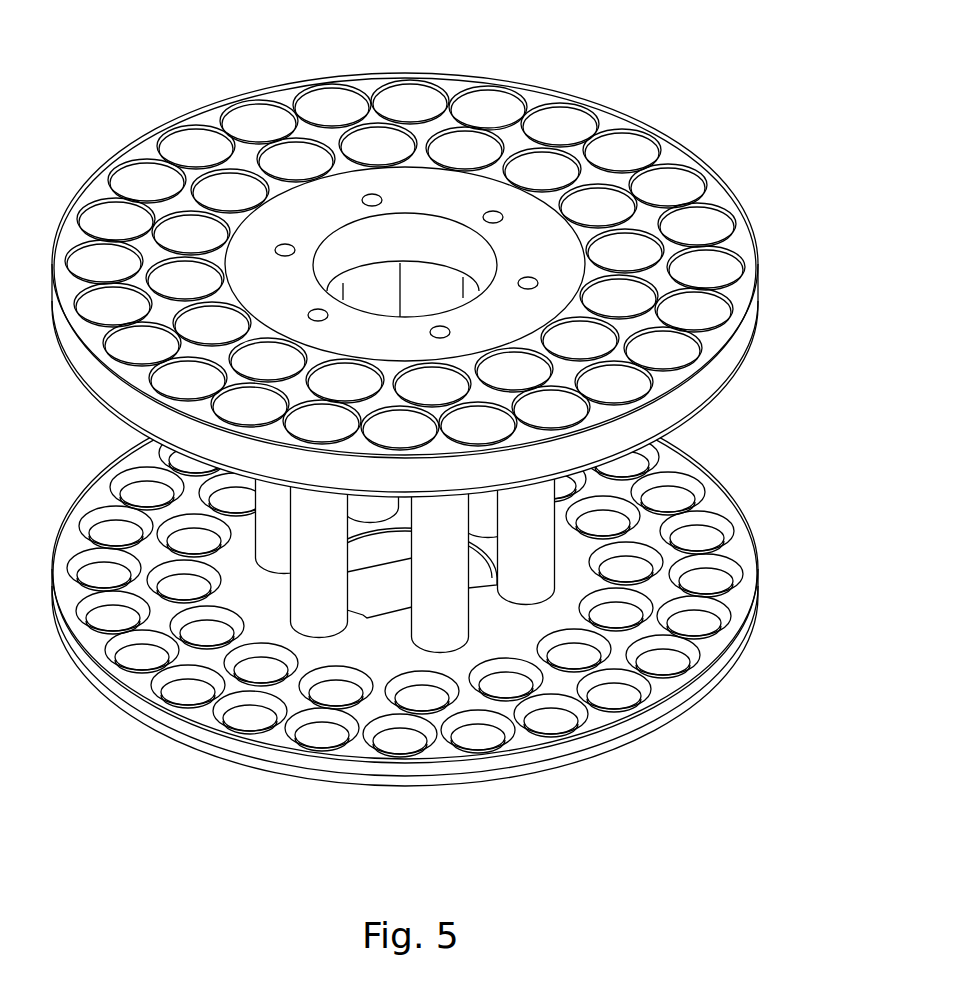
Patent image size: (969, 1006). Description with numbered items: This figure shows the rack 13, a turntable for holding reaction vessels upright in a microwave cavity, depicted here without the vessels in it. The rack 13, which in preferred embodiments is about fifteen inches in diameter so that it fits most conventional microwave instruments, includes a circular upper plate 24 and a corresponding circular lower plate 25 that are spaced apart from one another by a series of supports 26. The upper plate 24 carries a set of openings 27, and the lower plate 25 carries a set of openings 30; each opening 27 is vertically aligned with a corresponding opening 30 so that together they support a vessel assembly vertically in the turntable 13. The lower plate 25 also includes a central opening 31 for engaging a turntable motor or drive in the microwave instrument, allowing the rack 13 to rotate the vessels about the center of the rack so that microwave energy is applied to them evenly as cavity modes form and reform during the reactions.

The rack 13 is at (445, 431).
The upper plate 24 is at (441, 257).
The lower plate 25 is at (406, 612).
The supports 26 is at (452, 589).
The openings 27 is at (735, 272).
The openings 30 is at (549, 647).
The opening 31 is at (405, 492).